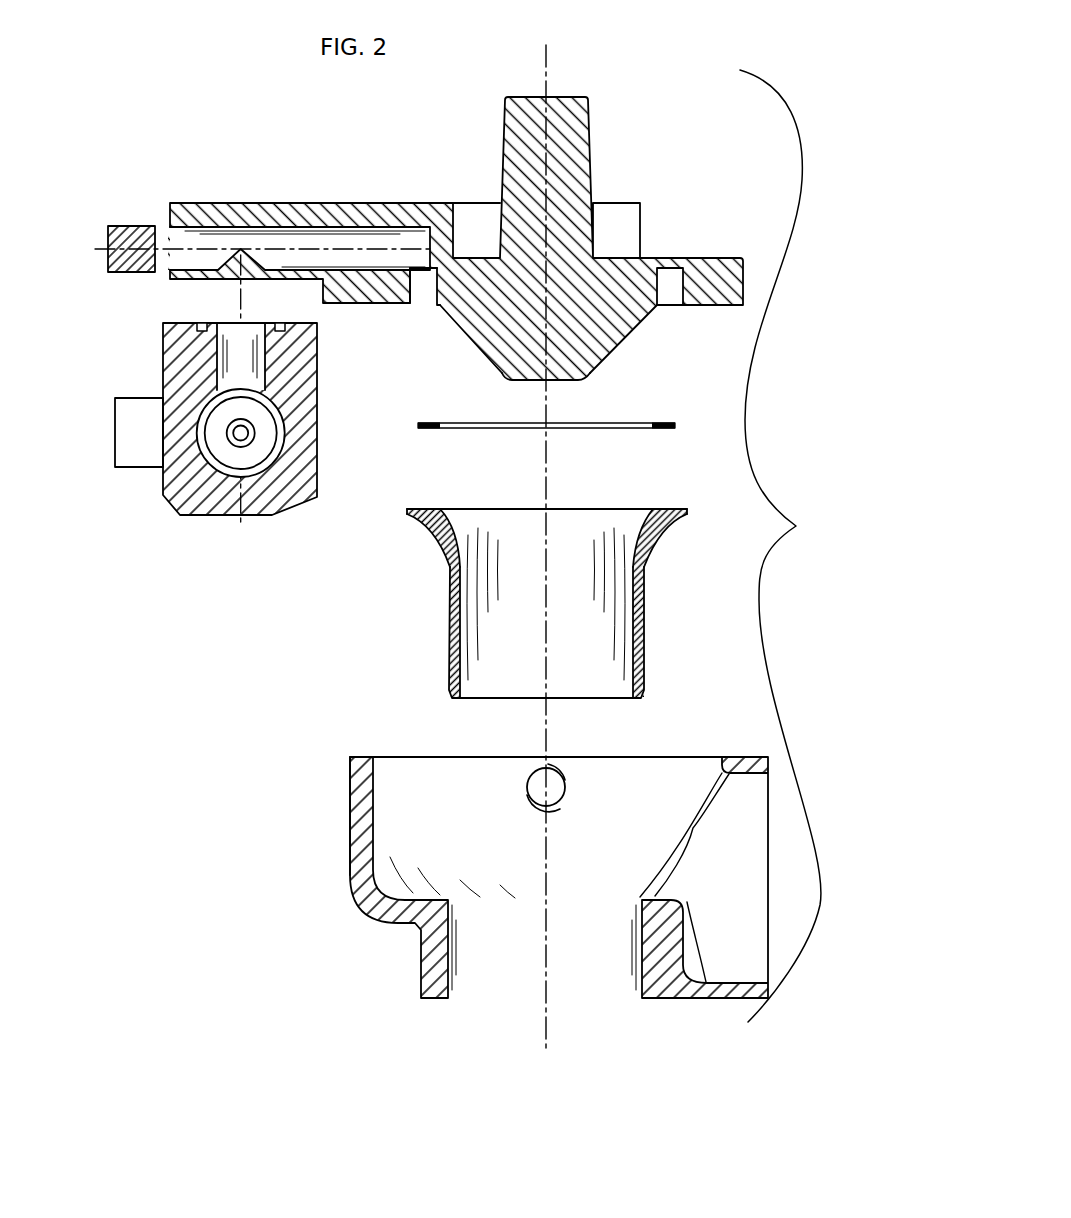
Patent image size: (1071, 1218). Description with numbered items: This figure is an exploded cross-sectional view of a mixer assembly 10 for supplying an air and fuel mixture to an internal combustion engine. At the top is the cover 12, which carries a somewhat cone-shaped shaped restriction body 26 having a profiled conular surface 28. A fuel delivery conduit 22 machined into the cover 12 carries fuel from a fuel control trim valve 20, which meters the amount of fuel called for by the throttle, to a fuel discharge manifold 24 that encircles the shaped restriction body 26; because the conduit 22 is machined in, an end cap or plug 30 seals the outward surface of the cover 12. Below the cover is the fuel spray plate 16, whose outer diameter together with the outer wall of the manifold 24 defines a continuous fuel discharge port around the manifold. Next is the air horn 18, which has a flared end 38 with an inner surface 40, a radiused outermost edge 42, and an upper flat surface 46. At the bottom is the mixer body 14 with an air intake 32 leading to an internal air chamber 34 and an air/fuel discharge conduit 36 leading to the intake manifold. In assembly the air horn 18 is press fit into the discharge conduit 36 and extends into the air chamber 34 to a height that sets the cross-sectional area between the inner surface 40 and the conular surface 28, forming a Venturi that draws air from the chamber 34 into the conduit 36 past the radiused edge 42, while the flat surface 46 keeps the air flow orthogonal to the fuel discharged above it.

The mixer assembly 10 is at (785, 546).
The cover 12 is at (722, 260).
The mixer body 14 is at (675, 993).
The fuel spray plate 16 is at (667, 423).
The air horn 18 is at (645, 612).
The fuel control trim valve 20 is at (210, 407).
The fuel delivery conduit 22 is at (320, 238).
The fuel discharge manifold 24 is at (422, 283).
The shaped restriction body 26 is at (577, 320).
The profiled conular surface 28 is at (482, 340).
The end cap or plug 30 is at (131, 240).
The air intake 32 is at (740, 924).
The internal air chamber 34 is at (390, 836).
The air/fuel discharge conduit 36 is at (511, 958).
The flared end 38 is at (420, 538).
The inner surface 40 is at (423, 505).
The outermost edge 42 is at (405, 511).
The upper flat surface 46 is at (415, 506).